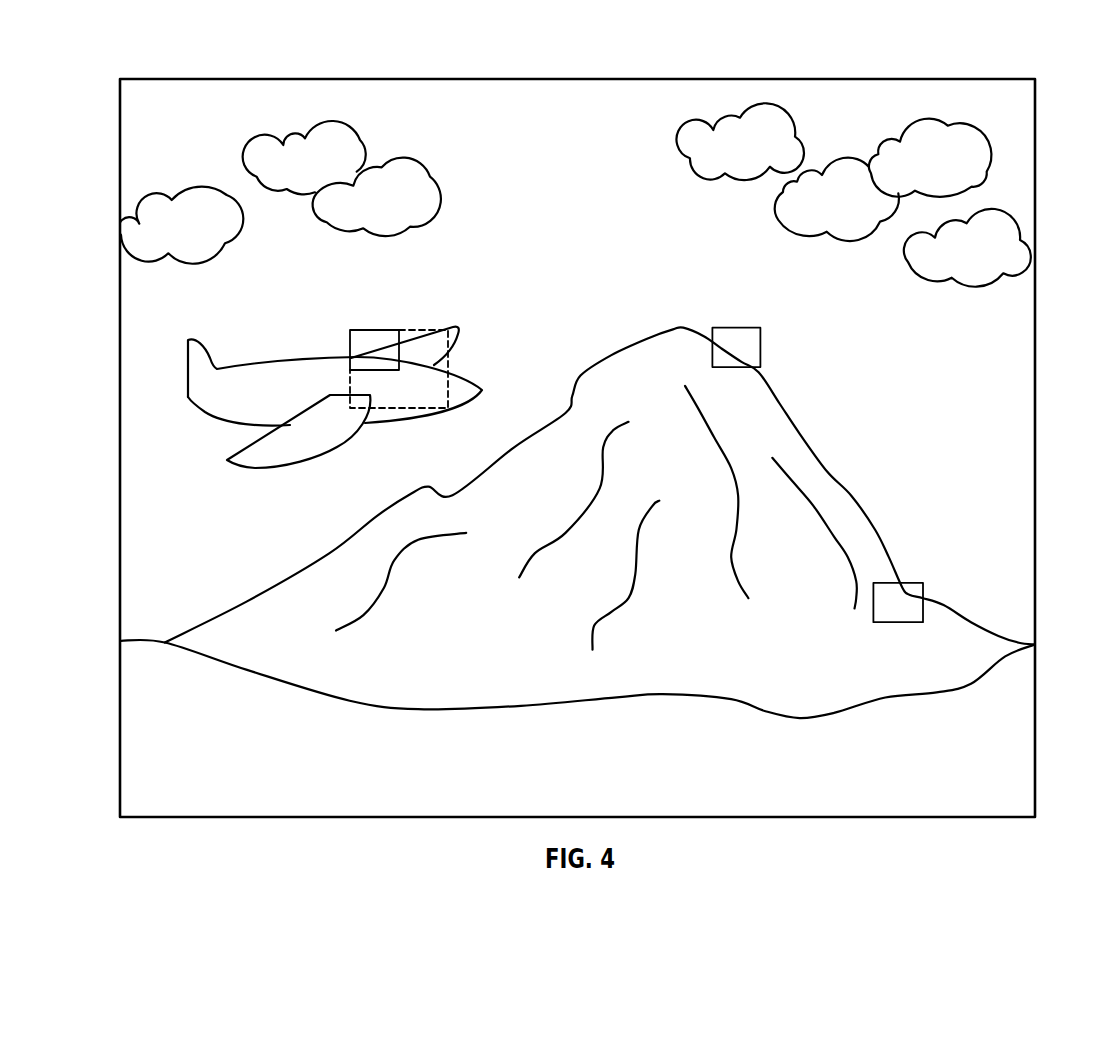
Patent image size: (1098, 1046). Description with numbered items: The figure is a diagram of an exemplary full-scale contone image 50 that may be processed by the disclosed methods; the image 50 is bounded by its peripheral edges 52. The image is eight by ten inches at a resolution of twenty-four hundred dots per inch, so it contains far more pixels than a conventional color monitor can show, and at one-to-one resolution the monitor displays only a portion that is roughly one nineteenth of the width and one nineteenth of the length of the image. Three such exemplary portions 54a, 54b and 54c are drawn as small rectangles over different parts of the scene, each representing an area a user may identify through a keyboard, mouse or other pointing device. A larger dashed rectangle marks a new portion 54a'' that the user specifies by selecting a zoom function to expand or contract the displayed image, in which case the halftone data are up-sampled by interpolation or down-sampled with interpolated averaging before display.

The contone image 50 is at (1035, 175).
The peripheral edges 52 is at (833, 79).
The portion 54a is at (386, 331).
The new portion 54a'' is at (439, 364).
The portion 54b is at (757, 328).
The portion 54c is at (913, 583).